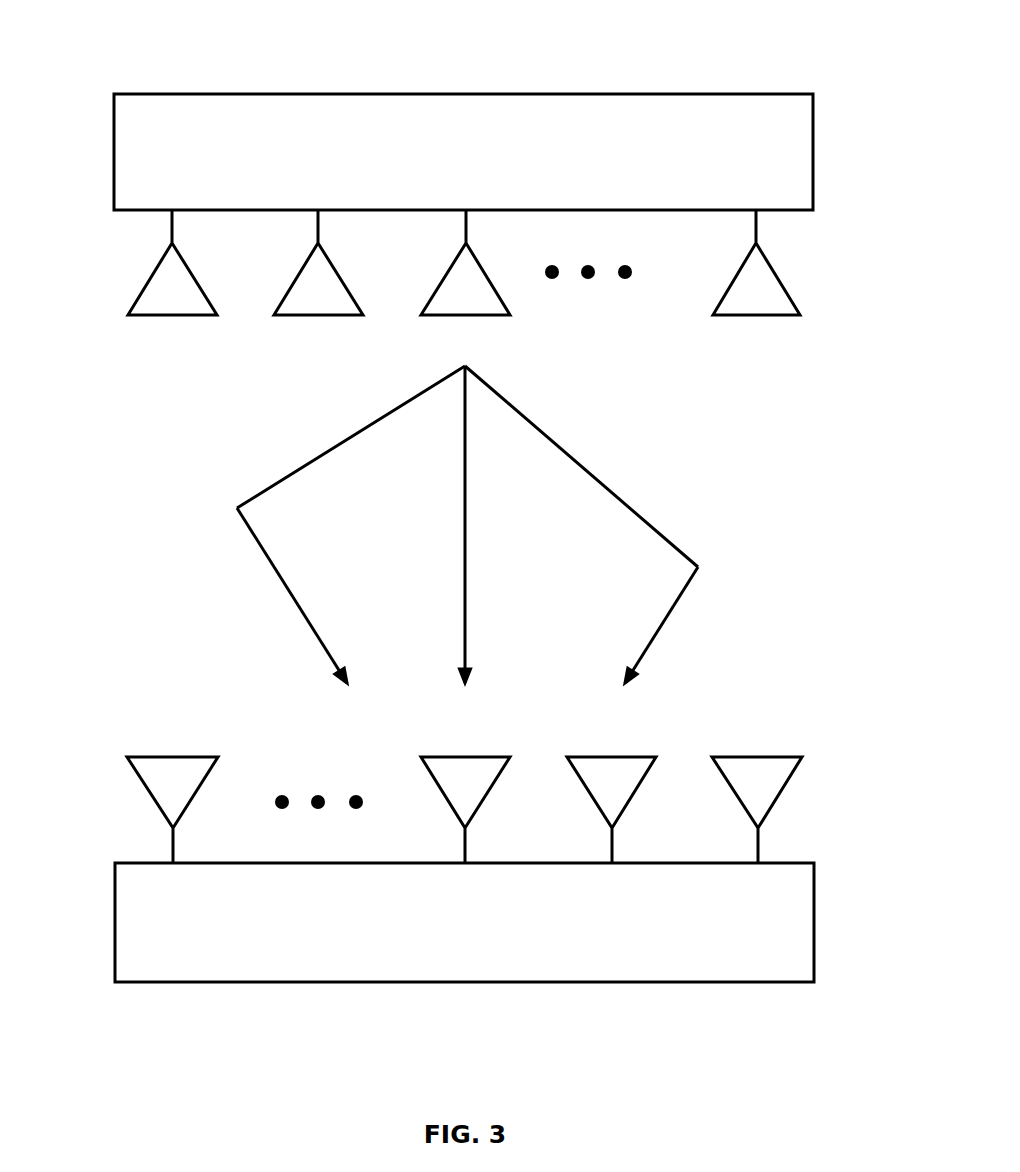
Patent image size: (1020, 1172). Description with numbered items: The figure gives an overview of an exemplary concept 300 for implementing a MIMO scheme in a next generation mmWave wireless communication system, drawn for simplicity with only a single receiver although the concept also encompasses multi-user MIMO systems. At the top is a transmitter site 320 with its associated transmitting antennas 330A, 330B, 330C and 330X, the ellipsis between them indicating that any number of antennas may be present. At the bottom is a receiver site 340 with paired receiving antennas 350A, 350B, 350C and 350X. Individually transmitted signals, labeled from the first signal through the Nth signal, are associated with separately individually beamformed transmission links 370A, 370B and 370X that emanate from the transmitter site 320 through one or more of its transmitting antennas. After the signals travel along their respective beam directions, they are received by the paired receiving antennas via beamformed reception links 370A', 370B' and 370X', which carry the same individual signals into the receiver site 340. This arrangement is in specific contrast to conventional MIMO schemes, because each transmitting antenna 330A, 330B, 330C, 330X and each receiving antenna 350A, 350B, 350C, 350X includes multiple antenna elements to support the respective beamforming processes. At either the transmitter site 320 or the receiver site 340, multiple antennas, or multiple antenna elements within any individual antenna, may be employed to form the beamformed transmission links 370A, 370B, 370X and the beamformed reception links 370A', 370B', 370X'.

The exemplary concept 300 is at (464, 507).
The transmitter site 320 is at (428, 152).
The transmitting antenna 330A is at (156, 262).
The transmitting antenna 330B is at (302, 262).
The transmitting antenna 330C is at (449, 262).
The transmitting antenna 330X is at (740, 262).
The receiver site 340 is at (428, 922).
The receiving antenna 350A is at (740, 810).
The receiving antenna 350B is at (594, 810).
The receiving antenna 350C is at (445, 810).
The receiving antenna 350X is at (156, 810).
The beamformed transmission link 370A is at (327, 437).
The beamformed reception link 370A' is at (285, 595).
The beamformed transmission link 370B is at (429, 443).
The beamformed reception link 370B' is at (428, 601).
The beamformed transmission link 370X is at (581, 466).
The beamformed reception link 370X' is at (629, 625).